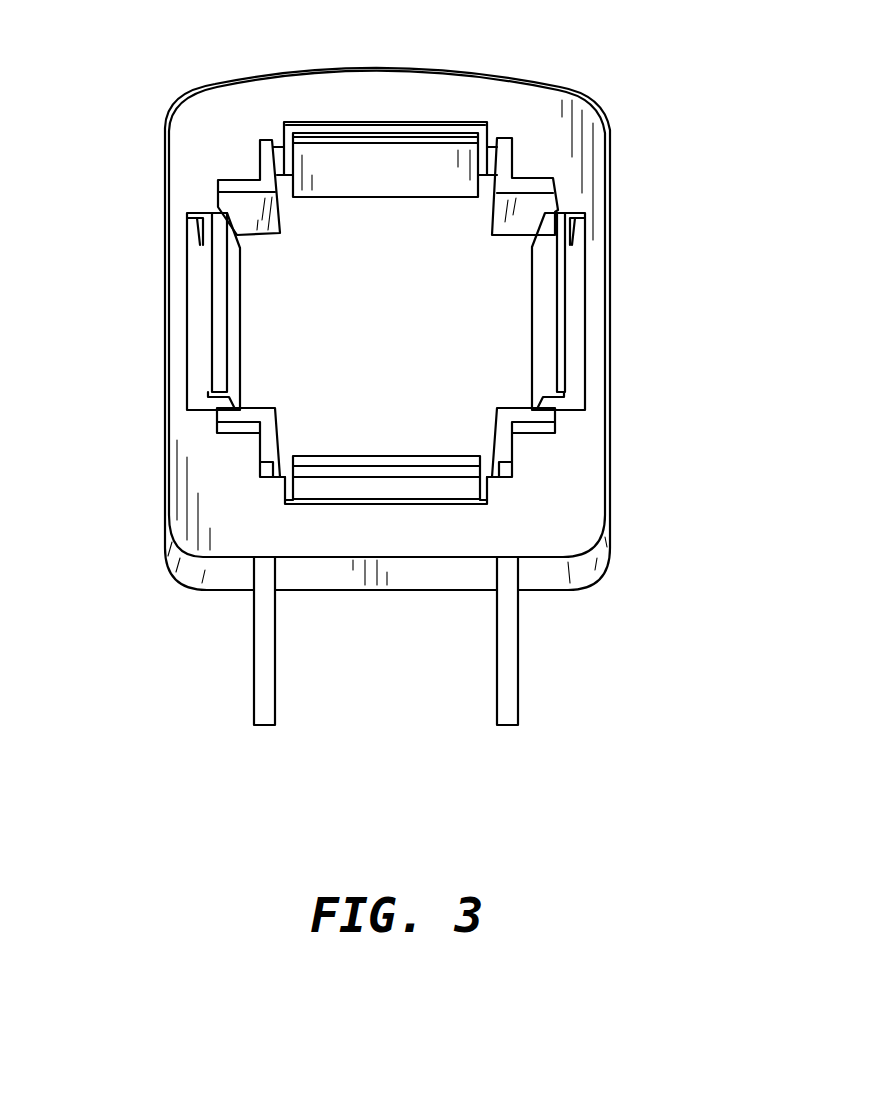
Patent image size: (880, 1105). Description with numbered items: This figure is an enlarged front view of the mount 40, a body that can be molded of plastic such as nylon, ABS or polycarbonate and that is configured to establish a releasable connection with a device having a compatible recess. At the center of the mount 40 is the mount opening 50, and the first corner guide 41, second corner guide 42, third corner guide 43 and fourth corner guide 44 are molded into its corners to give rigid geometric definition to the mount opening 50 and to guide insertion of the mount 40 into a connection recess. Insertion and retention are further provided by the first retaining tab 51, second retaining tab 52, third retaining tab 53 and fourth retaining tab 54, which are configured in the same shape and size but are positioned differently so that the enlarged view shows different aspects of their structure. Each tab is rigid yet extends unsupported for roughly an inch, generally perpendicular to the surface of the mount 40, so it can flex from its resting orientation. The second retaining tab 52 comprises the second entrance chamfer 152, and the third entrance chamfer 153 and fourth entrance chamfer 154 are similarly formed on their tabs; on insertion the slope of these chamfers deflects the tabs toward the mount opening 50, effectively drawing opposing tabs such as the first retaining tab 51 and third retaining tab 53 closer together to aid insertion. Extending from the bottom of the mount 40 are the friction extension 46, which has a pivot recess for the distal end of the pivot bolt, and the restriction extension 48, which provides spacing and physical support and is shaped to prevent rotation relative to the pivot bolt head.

The mount 40 is at (573, 486).
The first corner guide 41 is at (527, 188).
The second corner guide 42 is at (528, 413).
The third corner guide 43 is at (240, 412).
The fourth corner guide 44 is at (242, 182).
The friction extension 46 is at (258, 662).
The restriction extension 48 is at (505, 650).
The mount opening 50 is at (366, 316).
The first retaining tab 51 is at (373, 170).
The second retaining tab 52 is at (540, 313).
The third retaining tab 53 is at (410, 483).
The fourth retaining tab 54 is at (234, 343).
The second entrance chamfer 152 is at (560, 285).
The third entrance chamfer 153 is at (318, 472).
The fourth entrance chamfer 154 is at (210, 302).